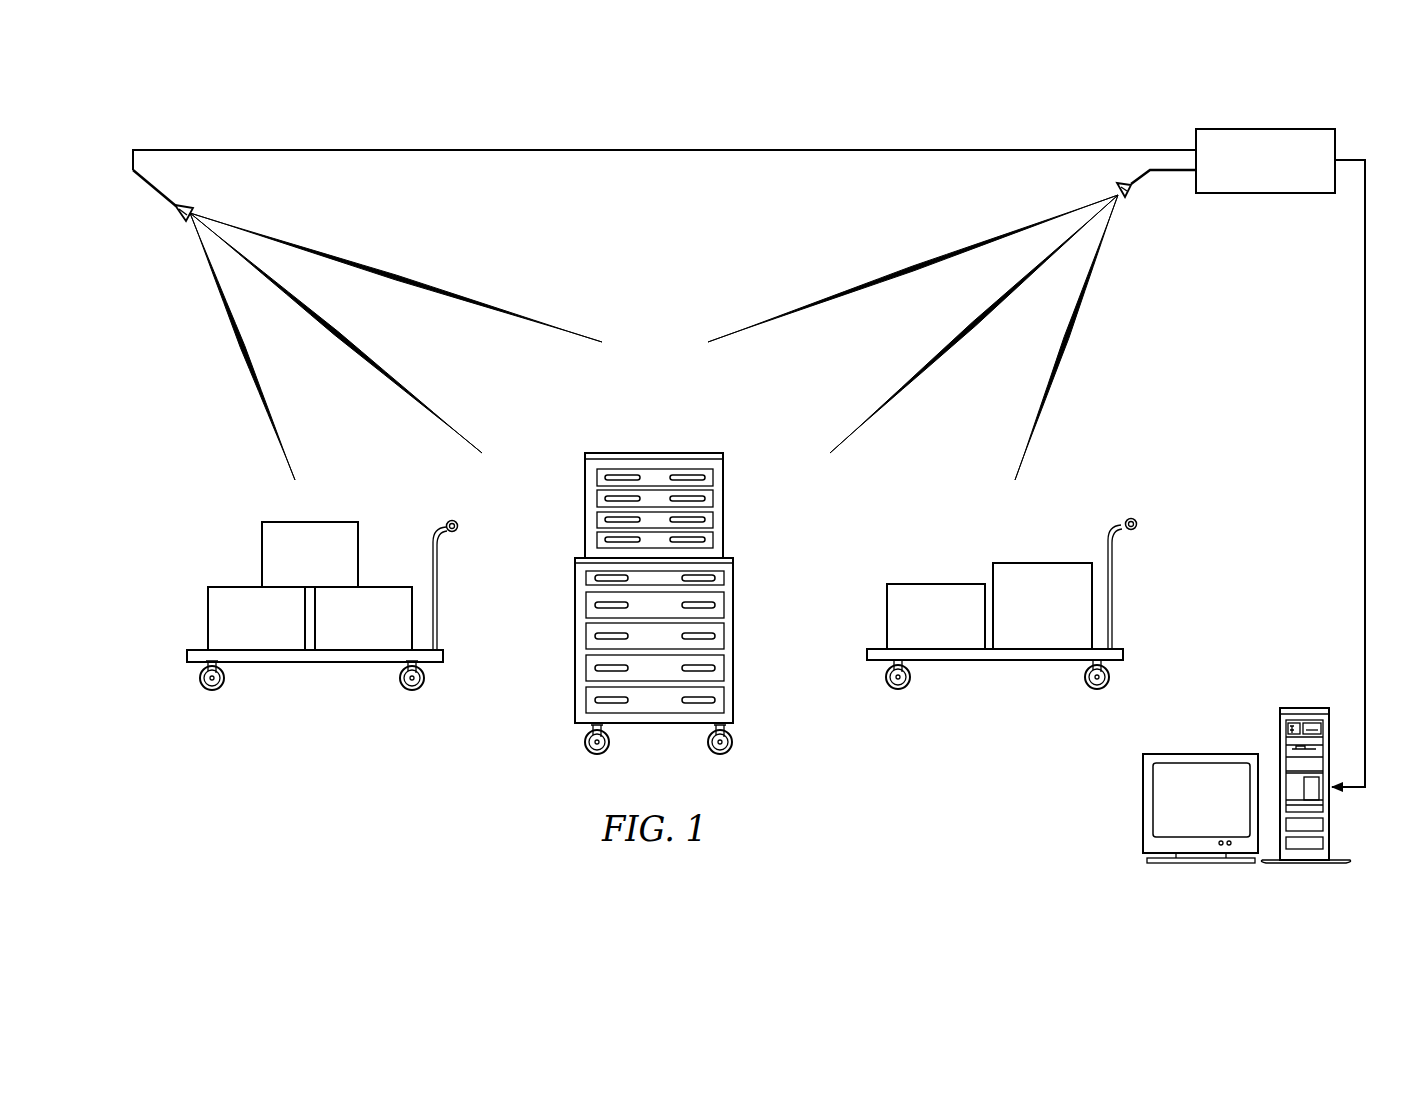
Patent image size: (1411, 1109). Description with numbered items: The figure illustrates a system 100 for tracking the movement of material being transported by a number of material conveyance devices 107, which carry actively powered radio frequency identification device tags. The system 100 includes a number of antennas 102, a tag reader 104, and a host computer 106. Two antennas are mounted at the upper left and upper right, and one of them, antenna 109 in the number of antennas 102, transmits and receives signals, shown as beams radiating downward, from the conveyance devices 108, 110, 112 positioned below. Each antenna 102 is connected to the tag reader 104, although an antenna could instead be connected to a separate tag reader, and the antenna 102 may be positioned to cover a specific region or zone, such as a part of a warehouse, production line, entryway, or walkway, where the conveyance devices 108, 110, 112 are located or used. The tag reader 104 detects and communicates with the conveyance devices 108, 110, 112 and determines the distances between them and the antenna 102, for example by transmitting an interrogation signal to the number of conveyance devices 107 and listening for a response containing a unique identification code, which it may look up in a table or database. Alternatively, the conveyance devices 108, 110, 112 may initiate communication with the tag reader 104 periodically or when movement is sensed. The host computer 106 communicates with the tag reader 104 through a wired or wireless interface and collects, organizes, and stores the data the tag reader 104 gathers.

The system 100 is at (542, 110).
The number of antennas 102 is at (172, 213).
The tag reader 104 is at (1264, 129).
The host computer 106 is at (1330, 818).
The number of material conveyance devices 107 is at (447, 655).
The conveyance device 108 is at (462, 521).
The antenna 109 is at (188, 206).
The conveyance device 110 is at (669, 450).
The conveyance device 112 is at (1142, 521).